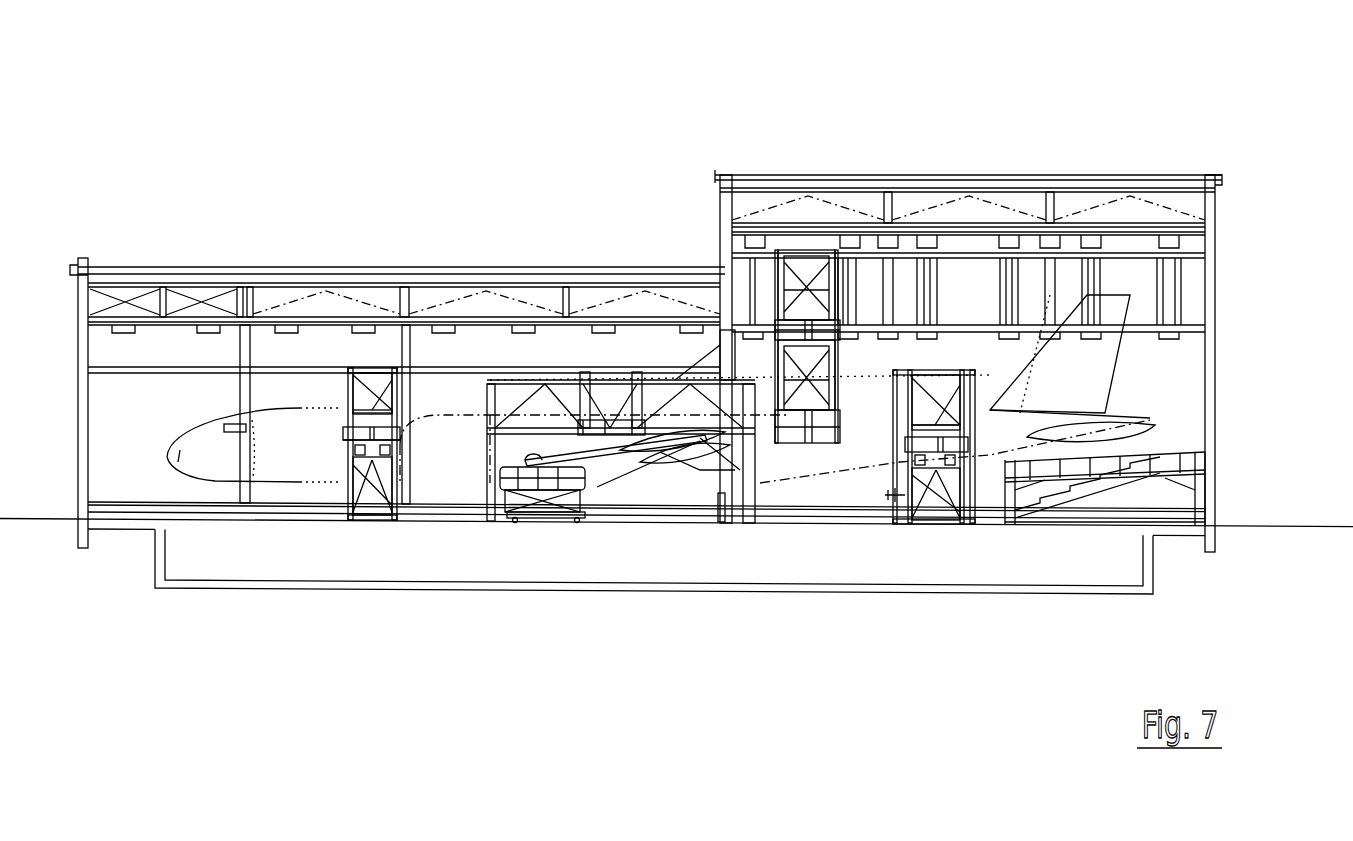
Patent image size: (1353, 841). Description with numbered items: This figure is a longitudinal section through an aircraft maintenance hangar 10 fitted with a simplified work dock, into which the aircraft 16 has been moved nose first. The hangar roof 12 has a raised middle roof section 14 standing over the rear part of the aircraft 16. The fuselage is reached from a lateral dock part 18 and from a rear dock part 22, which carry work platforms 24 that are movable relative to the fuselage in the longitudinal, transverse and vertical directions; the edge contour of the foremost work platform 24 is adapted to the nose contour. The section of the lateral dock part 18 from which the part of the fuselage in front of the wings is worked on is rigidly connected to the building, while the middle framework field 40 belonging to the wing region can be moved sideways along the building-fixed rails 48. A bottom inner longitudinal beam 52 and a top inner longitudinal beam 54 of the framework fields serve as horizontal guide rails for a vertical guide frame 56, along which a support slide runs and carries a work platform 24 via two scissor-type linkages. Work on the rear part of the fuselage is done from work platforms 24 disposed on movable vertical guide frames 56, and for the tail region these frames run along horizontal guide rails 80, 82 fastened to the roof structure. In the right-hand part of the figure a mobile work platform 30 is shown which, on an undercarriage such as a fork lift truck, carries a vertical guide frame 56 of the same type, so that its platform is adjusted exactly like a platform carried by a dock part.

The aircraft maintenance hangar 10 is at (134, 530).
The roof 12 is at (113, 285).
The raised middle roof section 14 is at (1137, 183).
The aircraft 16 is at (240, 420).
The lateral dock part 18 is at (271, 366).
The rear dock part 22 is at (1092, 503).
The work platform 24 is at (345, 502).
The mobile work platform 30 is at (545, 524).
The middle framework field 40 is at (690, 505).
The building-fixed rail 48 is at (485, 524).
The bottom inner longitudinal beam 52 is at (215, 505).
The top inner longitudinal beam 54 is at (371, 366).
The vertical guide frame 56 is at (342, 445).
The horizontal guide rail 80 is at (1068, 257).
The horizontal guide rail 82 is at (1160, 260).